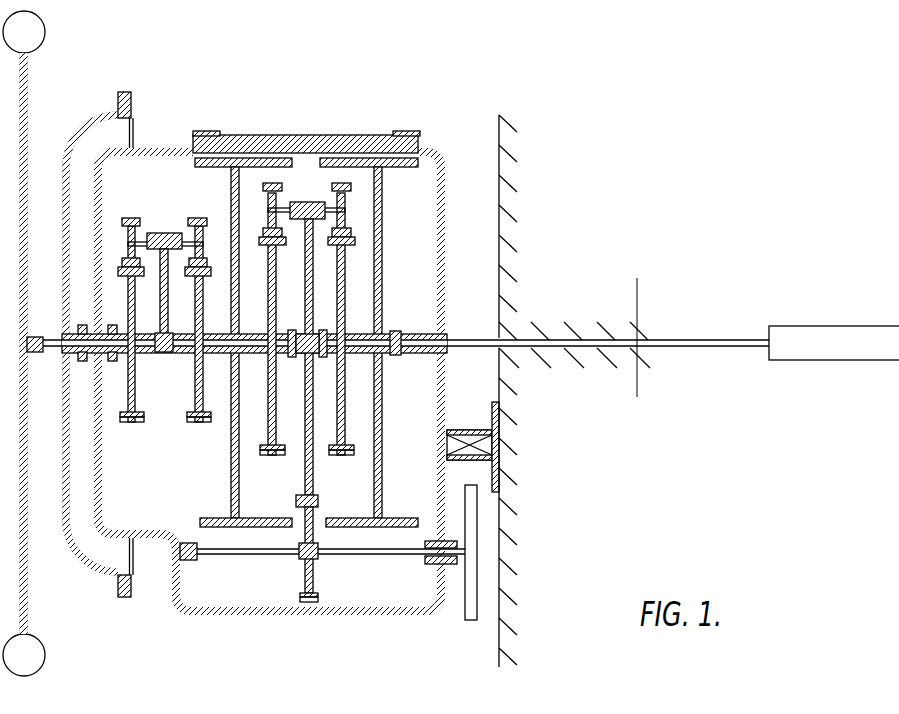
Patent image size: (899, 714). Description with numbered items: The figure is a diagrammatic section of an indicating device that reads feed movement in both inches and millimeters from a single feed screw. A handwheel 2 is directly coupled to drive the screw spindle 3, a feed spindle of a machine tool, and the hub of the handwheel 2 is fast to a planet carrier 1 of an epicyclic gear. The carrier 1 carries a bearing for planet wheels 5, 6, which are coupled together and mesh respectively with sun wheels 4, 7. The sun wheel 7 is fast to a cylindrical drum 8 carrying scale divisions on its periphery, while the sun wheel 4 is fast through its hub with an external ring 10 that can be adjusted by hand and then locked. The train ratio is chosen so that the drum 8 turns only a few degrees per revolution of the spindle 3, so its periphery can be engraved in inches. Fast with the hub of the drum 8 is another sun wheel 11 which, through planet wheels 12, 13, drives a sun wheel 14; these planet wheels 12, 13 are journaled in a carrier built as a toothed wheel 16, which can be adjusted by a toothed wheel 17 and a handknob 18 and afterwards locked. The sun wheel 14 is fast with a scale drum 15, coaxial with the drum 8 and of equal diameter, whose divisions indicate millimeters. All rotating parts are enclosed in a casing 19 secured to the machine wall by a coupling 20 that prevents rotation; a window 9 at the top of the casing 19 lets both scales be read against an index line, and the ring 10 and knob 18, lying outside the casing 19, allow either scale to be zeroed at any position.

The planet carrier 1 is at (168, 310).
The handwheel 2 is at (28, 330).
The screw spindle 3 is at (872, 335).
The sun wheel 4 is at (128, 283).
The planet wheel 5 is at (133, 217).
The planet wheel 6 is at (197, 218).
The sun wheel 7 is at (204, 310).
The cylindrical drum 8 is at (231, 175).
The window 9 is at (257, 145).
The external ring 10 is at (133, 101).
The sun wheel 11 is at (270, 321).
The planet wheel 12 is at (275, 197).
The planet wheel 13 is at (343, 198).
The sun wheel 14 is at (343, 387).
The scale drum 15 is at (382, 178).
The toothed wheel 16 is at (314, 485).
The toothed wheel 17 is at (317, 580).
The handknob 18 is at (470, 607).
The casing 19 is at (437, 158).
The coupling 20 is at (468, 430).